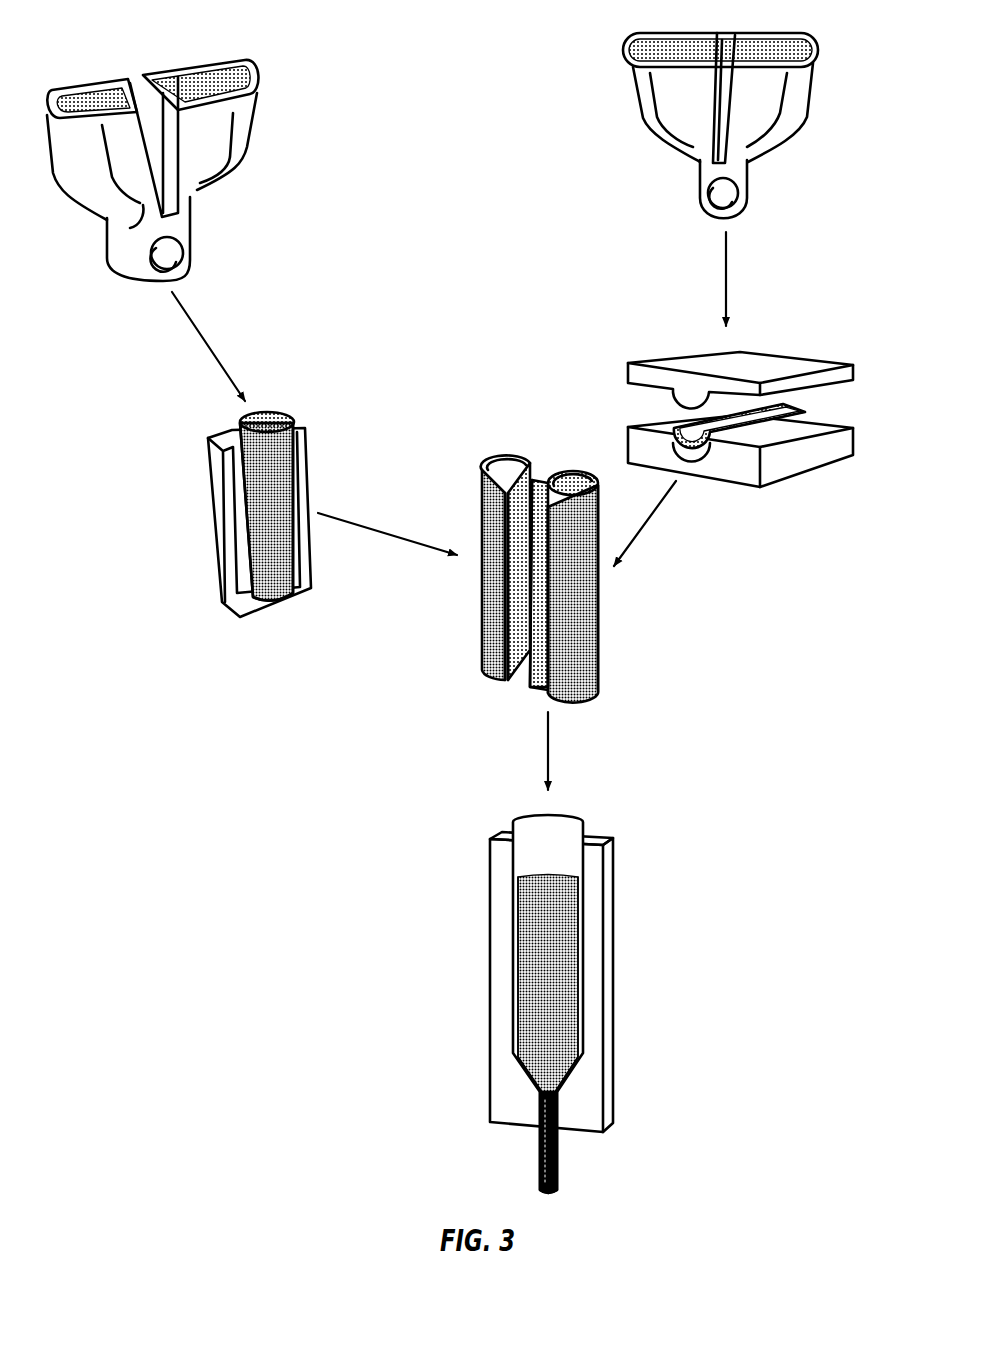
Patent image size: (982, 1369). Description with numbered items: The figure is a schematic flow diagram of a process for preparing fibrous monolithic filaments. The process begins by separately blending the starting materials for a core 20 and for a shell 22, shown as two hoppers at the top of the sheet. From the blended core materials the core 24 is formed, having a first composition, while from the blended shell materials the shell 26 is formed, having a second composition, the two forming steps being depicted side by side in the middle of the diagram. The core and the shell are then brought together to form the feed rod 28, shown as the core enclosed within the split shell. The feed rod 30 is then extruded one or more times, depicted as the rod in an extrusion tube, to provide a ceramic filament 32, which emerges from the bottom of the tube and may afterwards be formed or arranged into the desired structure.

The core starting material blending 20 is at (128, 79).
The shell starting material blending 22 is at (717, 33).
The core forming 24 is at (262, 412).
The shell forming 26 is at (807, 413).
The feed rod forming 28 is at (573, 670).
The feed rod extruding 30 is at (588, 957).
The ceramic filament 32 is at (550, 1157).